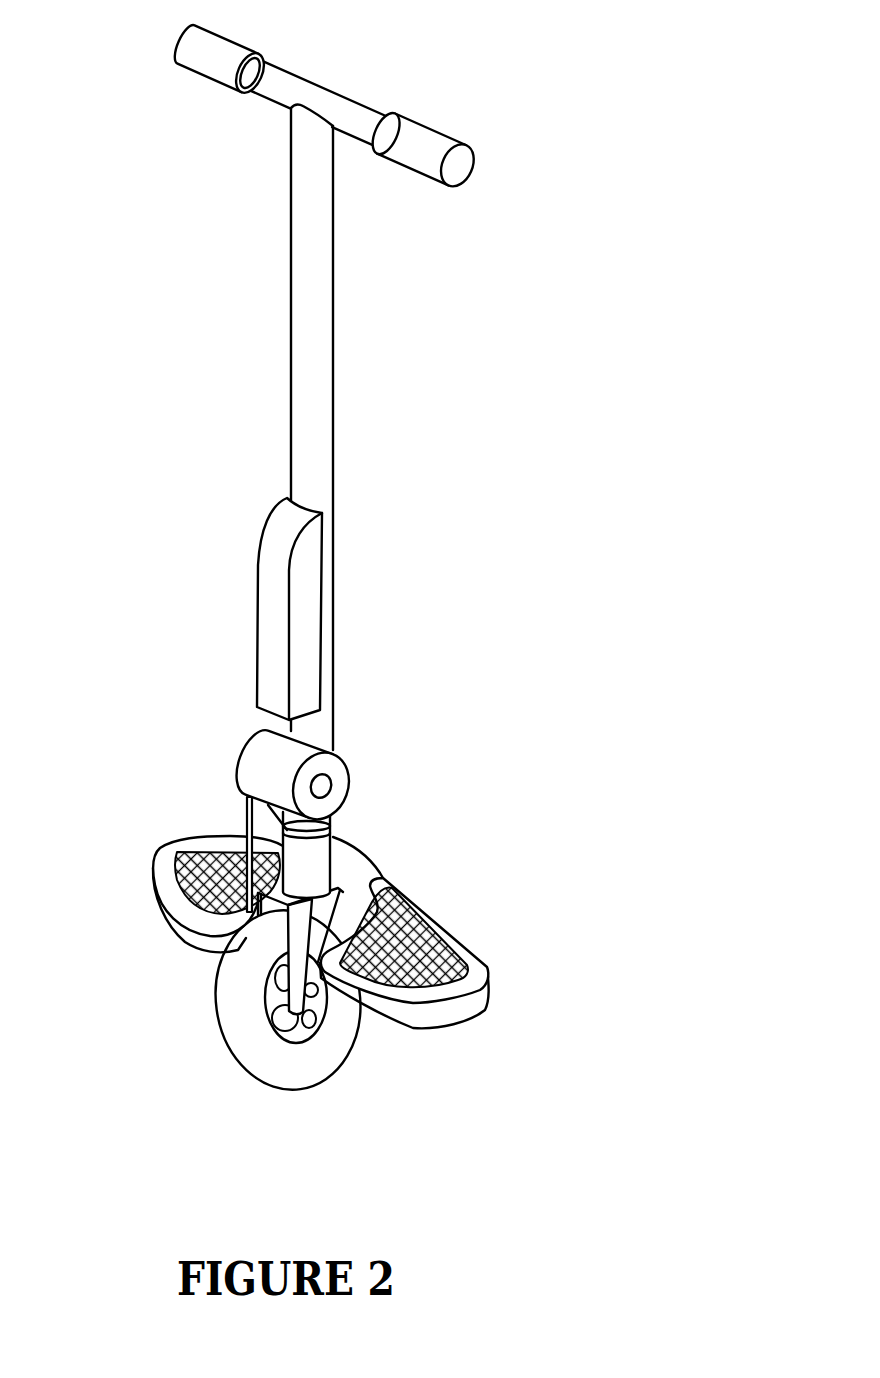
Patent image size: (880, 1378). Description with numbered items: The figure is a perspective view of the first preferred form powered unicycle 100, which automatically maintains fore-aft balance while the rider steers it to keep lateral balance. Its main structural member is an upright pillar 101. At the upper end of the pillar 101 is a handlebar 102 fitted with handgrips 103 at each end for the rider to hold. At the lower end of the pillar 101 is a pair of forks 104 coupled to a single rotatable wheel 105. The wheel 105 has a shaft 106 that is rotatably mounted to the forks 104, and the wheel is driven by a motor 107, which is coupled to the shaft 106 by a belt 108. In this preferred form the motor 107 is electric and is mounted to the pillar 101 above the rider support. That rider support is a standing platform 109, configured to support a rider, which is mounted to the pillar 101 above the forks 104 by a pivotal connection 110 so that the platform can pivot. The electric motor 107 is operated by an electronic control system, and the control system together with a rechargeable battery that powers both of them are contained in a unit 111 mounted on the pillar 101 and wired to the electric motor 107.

The powered unicycle 100 is at (575, 128).
The pillar 101 is at (300, 339).
The handlebar 102 is at (319, 97).
The handgrips 103 is at (407, 127).
The forks 104 is at (318, 938).
The wheel 105 is at (301, 1065).
The shaft 106 is at (311, 997).
The motor 107 is at (325, 777).
The belt 108 is at (232, 833).
The standing platform 109 is at (433, 930).
The pivotal connection 110 is at (344, 878).
The unit 111 is at (270, 610).